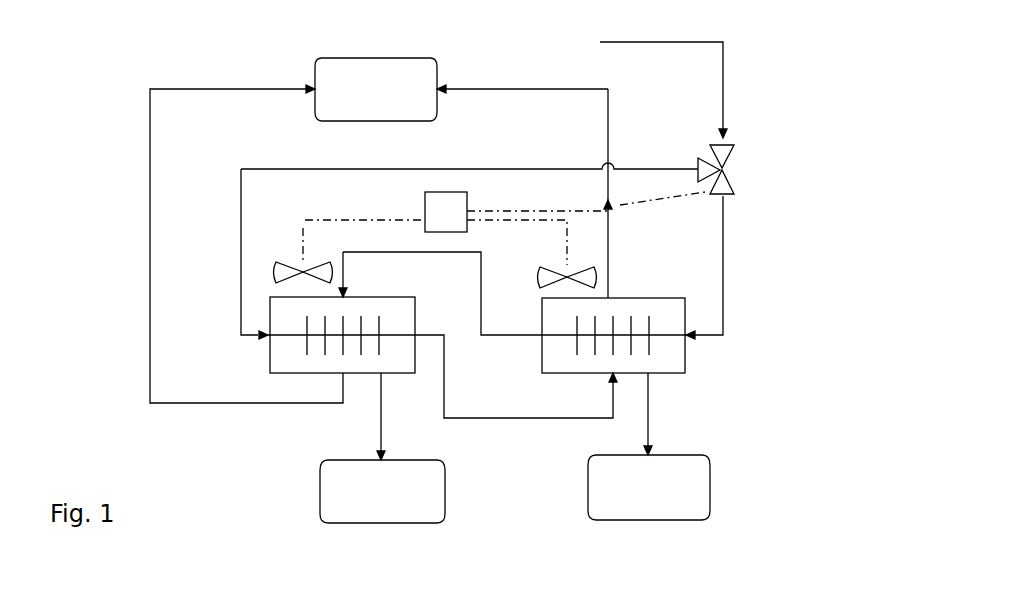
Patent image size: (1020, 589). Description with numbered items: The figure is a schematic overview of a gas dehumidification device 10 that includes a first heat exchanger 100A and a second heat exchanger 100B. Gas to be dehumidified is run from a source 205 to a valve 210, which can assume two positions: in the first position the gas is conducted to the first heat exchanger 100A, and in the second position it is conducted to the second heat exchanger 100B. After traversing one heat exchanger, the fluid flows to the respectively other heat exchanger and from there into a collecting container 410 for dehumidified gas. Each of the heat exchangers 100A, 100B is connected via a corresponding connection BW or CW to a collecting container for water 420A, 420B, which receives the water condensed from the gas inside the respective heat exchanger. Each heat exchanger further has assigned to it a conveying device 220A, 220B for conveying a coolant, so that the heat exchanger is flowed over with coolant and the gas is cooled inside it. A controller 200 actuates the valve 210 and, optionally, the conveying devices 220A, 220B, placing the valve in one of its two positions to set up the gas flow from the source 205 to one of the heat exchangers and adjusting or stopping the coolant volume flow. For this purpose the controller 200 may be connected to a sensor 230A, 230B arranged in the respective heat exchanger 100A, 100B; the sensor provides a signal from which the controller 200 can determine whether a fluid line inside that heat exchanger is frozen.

The gas dehumidification device 10 is at (88, 36).
The collecting container for dehumidified gas 410 is at (332, 76).
The source 205 is at (661, 77).
The valve 210 is at (735, 172).
The controller 200 is at (459, 192).
The conveying device 220A is at (290, 263).
The conveying device 220B is at (548, 270).
The sensor 230A is at (300, 330).
The sensor 230B is at (655, 328).
The first heat exchanger 100A is at (277, 369).
The second heat exchanger 100B is at (675, 366).
The collecting container for water 420A is at (415, 508).
The collecting container for water 420B is at (690, 505).